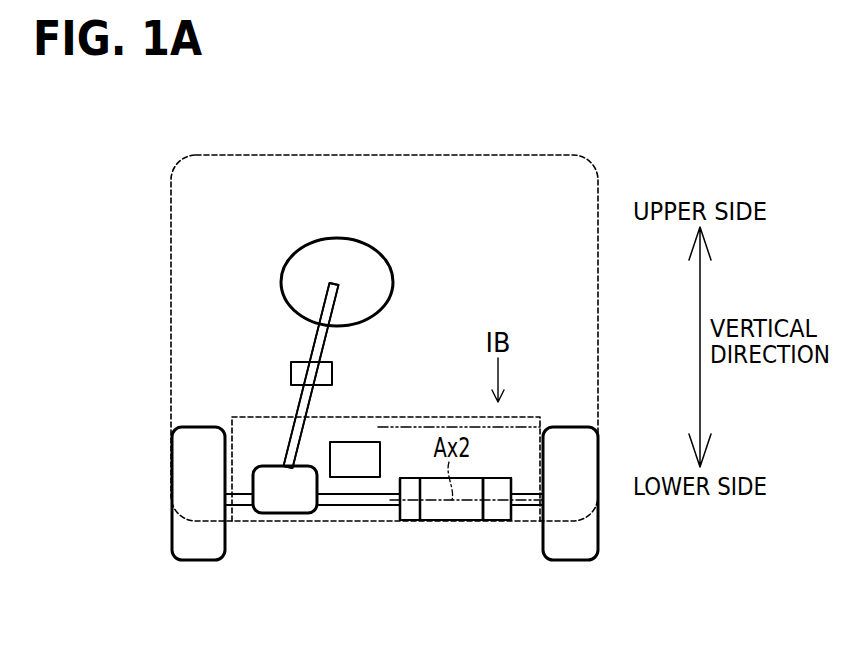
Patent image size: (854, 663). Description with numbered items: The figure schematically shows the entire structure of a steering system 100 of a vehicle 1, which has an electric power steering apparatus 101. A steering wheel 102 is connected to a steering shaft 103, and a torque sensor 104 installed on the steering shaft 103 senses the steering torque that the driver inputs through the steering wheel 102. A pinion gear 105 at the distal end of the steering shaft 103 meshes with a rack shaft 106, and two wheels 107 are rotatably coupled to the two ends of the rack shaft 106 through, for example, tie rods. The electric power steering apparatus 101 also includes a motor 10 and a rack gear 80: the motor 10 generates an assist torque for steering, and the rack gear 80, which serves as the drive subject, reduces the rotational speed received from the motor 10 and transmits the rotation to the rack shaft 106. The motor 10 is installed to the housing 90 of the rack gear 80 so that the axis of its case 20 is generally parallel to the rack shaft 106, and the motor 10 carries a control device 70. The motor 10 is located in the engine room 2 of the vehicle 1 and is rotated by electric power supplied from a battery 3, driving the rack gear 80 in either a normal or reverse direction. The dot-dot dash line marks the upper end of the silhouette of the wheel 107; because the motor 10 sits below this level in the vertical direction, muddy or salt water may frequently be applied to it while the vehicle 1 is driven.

The vehicle 1 is at (385, 155).
The steering system 100 is at (259, 270).
The electric power steering apparatus 101 is at (503, 268).
The steering wheel 102 is at (393, 280).
The steering shaft 103 is at (312, 348).
The torque sensor 104 is at (291, 378).
The engine room 2 is at (422, 417).
The battery 3 is at (354, 442).
The pinion gear 105 is at (290, 513).
The rack shaft 106 is at (347, 505).
The wheels 107 is at (205, 548).
The motor 10 is at (439, 537).
The case 20 is at (462, 520).
The control device 70 is at (407, 520).
The rack gear 80 is at (505, 520).
The housing 90 is at (488, 520).